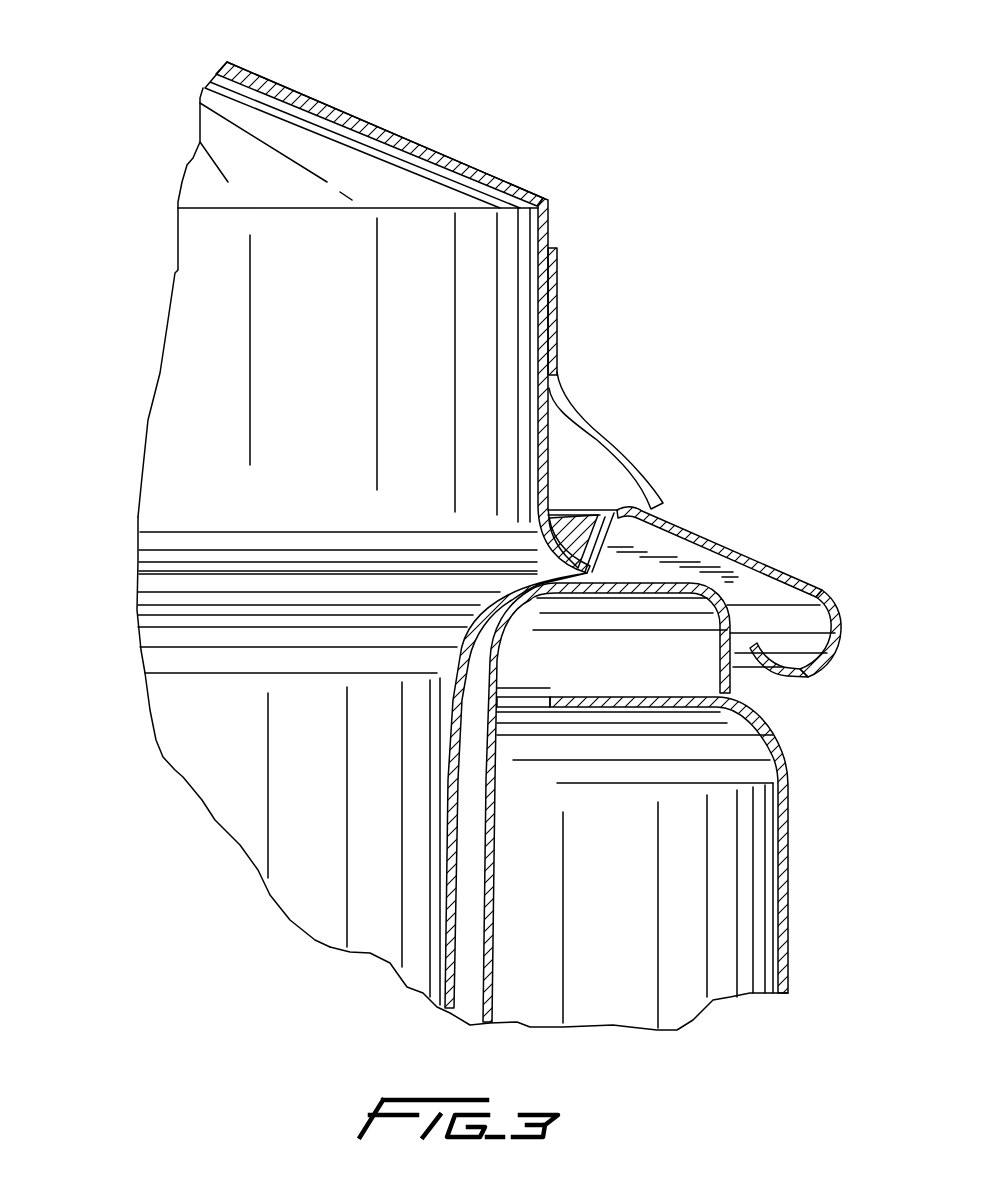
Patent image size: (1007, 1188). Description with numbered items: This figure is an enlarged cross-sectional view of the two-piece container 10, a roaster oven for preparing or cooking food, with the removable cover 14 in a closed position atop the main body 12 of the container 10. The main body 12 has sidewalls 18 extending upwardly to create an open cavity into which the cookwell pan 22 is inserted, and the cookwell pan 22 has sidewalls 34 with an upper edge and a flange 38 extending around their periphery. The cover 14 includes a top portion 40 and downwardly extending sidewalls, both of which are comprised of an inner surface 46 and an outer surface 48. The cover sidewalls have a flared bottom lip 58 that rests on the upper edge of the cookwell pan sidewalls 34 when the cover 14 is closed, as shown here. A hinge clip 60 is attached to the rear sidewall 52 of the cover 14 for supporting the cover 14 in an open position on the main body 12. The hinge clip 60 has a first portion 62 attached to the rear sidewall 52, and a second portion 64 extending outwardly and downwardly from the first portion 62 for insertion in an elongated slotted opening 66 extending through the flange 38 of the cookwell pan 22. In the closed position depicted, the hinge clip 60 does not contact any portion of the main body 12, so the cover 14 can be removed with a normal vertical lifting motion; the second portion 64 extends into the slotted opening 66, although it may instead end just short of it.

The two-piece container 10 is at (135, 271).
The main body 12 is at (785, 870).
The removable cover 14 is at (213, 123).
The sidewalls 18 is at (773, 727).
The cookwell pan 22 is at (210, 758).
The sidewalls 34 is at (448, 960).
The flange 38 is at (775, 575).
The top portion 40 is at (273, 90).
The inner surface 46 is at (343, 138).
The outer surface 48 is at (432, 150).
The rear sidewall 52 is at (540, 230).
The flared bottom lip 58 is at (577, 523).
The hinge clip 60 is at (588, 367).
The first portion 62 is at (553, 302).
The second portion 64 is at (608, 438).
The elongated slotted opening 66 is at (678, 530).